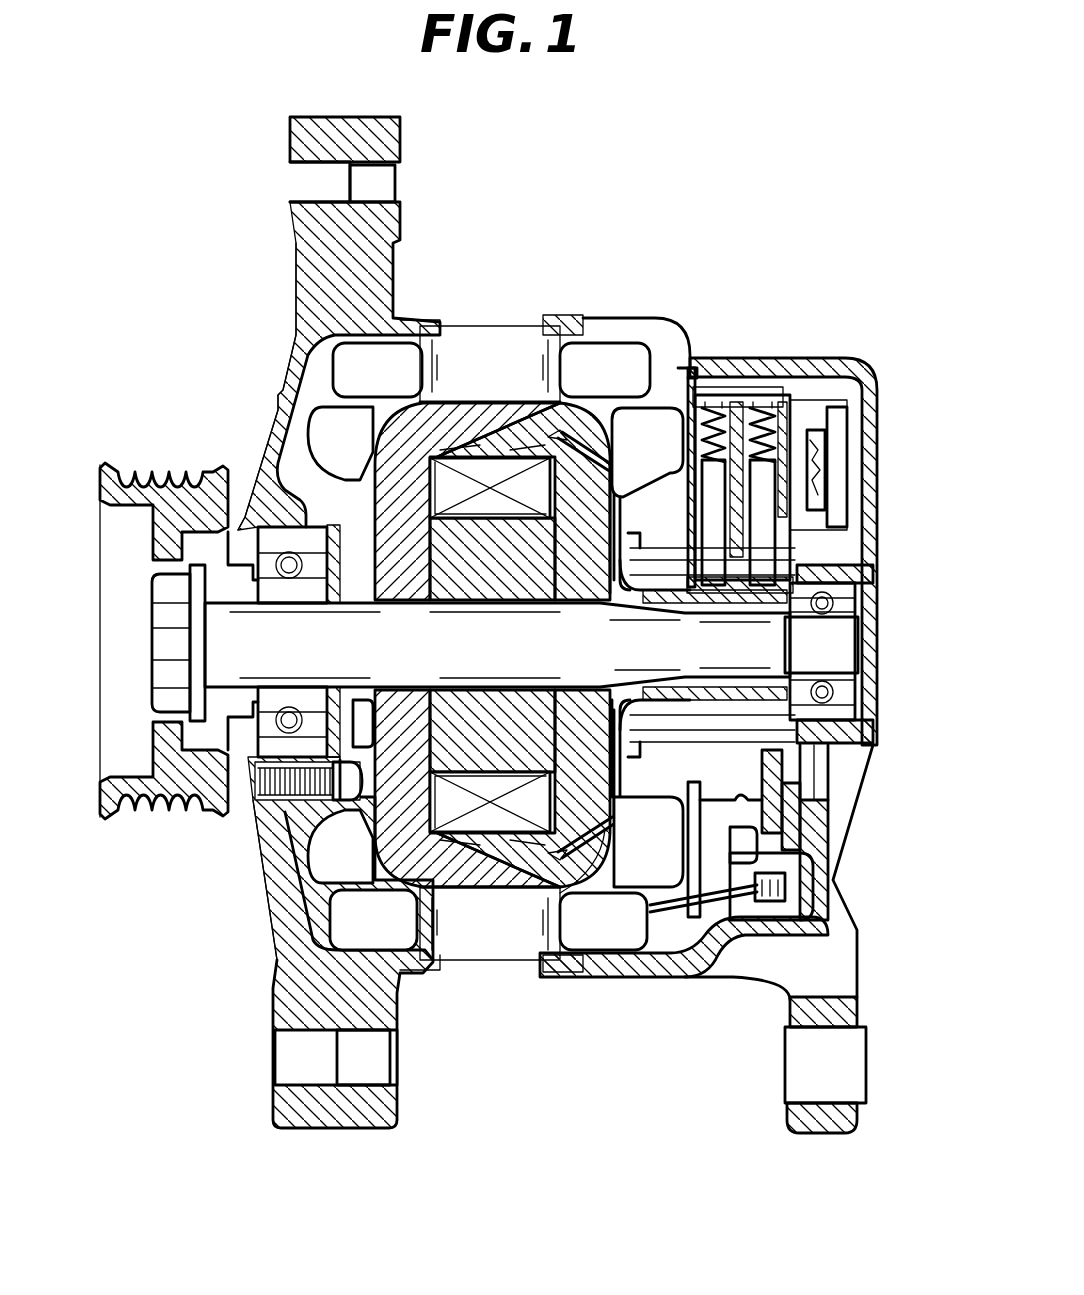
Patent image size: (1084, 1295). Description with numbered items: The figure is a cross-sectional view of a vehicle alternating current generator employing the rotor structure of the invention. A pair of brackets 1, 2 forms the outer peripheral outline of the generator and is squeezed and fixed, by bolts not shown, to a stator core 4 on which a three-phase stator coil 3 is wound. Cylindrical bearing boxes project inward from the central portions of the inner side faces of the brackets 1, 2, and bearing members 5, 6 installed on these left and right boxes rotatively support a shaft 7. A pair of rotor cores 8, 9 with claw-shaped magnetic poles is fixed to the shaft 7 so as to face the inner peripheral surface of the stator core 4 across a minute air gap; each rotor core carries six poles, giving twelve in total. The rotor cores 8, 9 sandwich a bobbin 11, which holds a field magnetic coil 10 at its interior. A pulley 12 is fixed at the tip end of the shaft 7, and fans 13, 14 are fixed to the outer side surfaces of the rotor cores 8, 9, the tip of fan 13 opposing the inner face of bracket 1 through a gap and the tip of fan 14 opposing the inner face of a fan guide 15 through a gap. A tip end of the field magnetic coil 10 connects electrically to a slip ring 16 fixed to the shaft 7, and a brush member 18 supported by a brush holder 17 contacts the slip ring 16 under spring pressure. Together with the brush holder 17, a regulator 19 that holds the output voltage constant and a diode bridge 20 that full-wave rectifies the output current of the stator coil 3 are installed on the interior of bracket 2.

The bracket 1 is at (293, 217).
The bracket 2 is at (866, 366).
The three-phase stator coil 3 is at (610, 355).
The stator core 4 is at (515, 335).
The bearing member 5 is at (290, 555).
The bearing member 6 is at (830, 585).
The shaft 7 is at (215, 607).
The rotor core 8 is at (410, 423).
The rotor core 9 is at (583, 428).
The field magnetic coil 10 is at (470, 470).
The bobbin 11 is at (423, 470).
The pulley 12 is at (105, 815).
The fan 13 is at (330, 857).
The fan 14 is at (650, 875).
The fan guide 15 is at (748, 868).
The slip ring 16 is at (855, 745).
The brush holder 17 is at (775, 400).
The brush member 18 is at (765, 523).
The regulator 19 is at (835, 450).
The diode bridge 20 is at (780, 830).